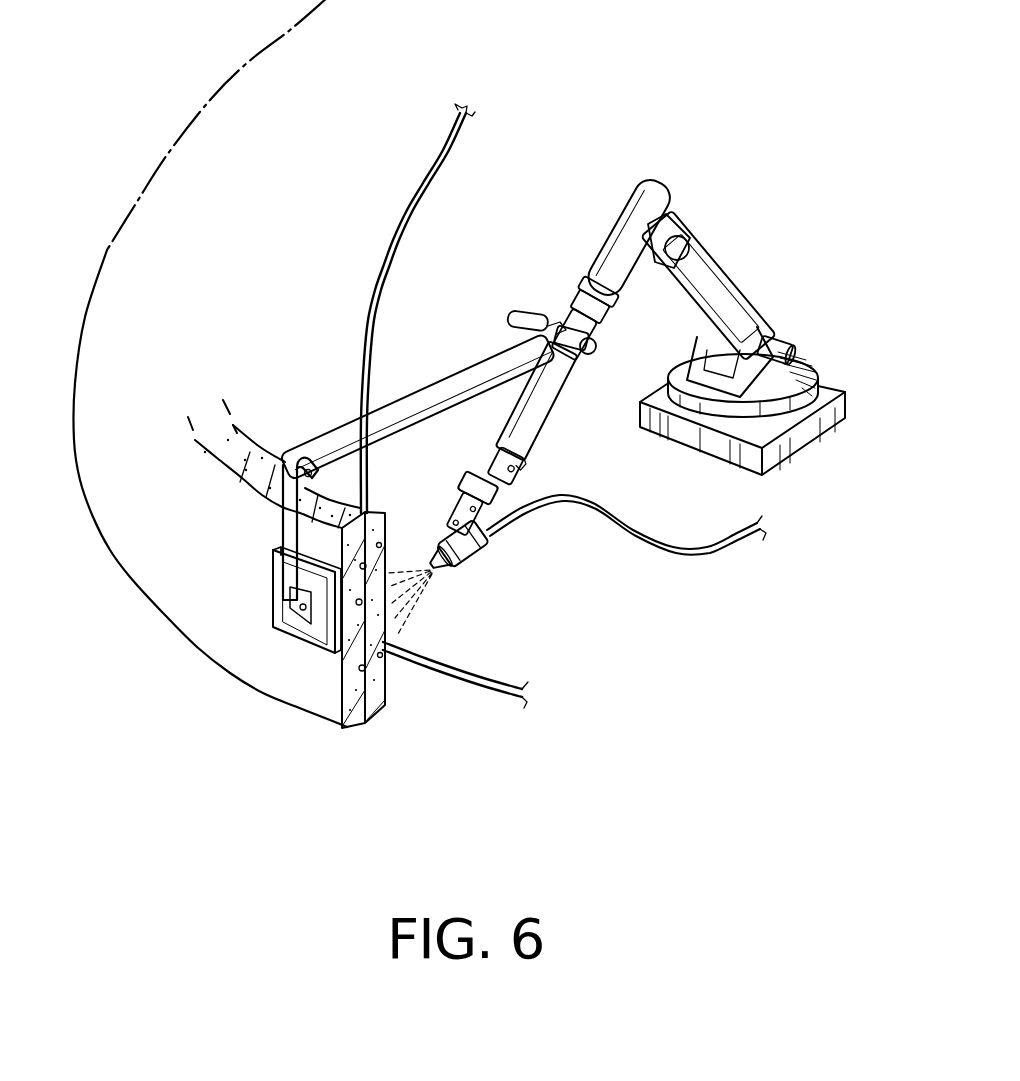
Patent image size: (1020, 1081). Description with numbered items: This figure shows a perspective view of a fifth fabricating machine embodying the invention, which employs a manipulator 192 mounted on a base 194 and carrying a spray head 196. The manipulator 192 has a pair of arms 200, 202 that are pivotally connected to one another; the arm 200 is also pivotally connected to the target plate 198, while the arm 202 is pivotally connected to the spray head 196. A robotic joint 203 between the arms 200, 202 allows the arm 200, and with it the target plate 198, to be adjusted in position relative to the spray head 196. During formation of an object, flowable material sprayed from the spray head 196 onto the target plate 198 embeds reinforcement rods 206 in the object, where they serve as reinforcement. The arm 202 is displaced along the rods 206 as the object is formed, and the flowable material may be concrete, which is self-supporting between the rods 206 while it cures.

The manipulator 192 is at (765, 246).
The base 194 is at (807, 432).
The spray head 196 is at (487, 551).
The target plate 198 is at (302, 620).
The arm 200 is at (427, 393).
The arm 202 is at (550, 398).
The robotic joint 203 is at (603, 353).
The reinforcement rods 206 is at (404, 200).